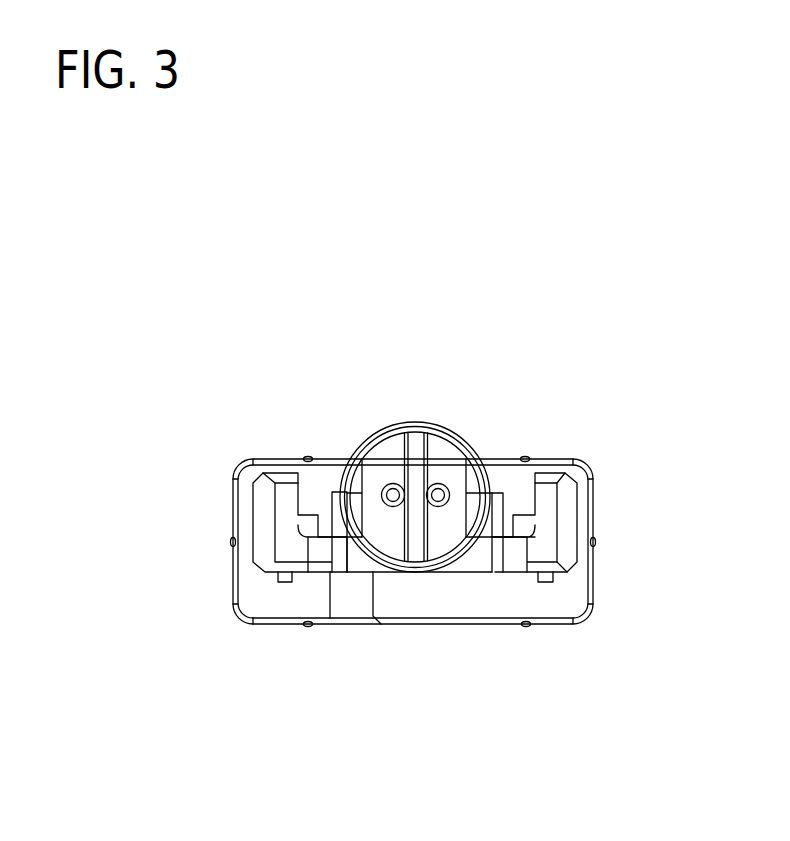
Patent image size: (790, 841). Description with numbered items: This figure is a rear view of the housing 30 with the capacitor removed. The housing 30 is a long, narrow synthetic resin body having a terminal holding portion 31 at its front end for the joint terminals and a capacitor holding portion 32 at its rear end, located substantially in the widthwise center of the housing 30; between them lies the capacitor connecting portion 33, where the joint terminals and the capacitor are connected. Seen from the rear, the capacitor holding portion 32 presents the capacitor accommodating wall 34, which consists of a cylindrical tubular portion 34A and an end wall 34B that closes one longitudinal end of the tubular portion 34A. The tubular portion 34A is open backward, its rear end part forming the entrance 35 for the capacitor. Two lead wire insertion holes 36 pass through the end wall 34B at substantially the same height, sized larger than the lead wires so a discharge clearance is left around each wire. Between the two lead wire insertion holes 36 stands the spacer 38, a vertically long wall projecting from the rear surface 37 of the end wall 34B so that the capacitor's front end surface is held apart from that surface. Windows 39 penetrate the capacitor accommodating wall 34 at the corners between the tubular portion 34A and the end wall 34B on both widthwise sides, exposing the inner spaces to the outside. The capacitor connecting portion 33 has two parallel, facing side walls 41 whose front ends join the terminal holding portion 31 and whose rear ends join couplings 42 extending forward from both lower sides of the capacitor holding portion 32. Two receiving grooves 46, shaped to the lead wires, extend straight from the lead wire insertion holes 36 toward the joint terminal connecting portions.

The housing 30 is at (291, 229).
The terminal holding portion 31 is at (522, 603).
The capacitor holding portion 32 is at (396, 422).
The capacitor connecting portion 33 is at (568, 484).
The capacitor accommodating wall 34 is at (417, 427).
The tubular portion 34A is at (445, 428).
The end wall 34B is at (374, 548).
The entrance 35 is at (443, 536).
The lead wire insertion holes 36 is at (437, 493).
The rear surface of the end wall 37 is at (452, 550).
The spacer 38 is at (410, 528).
The windows 39 is at (362, 507).
The side walls 41 is at (265, 517).
The couplings 42 is at (355, 560).
The receiving grooves 46 is at (441, 506).